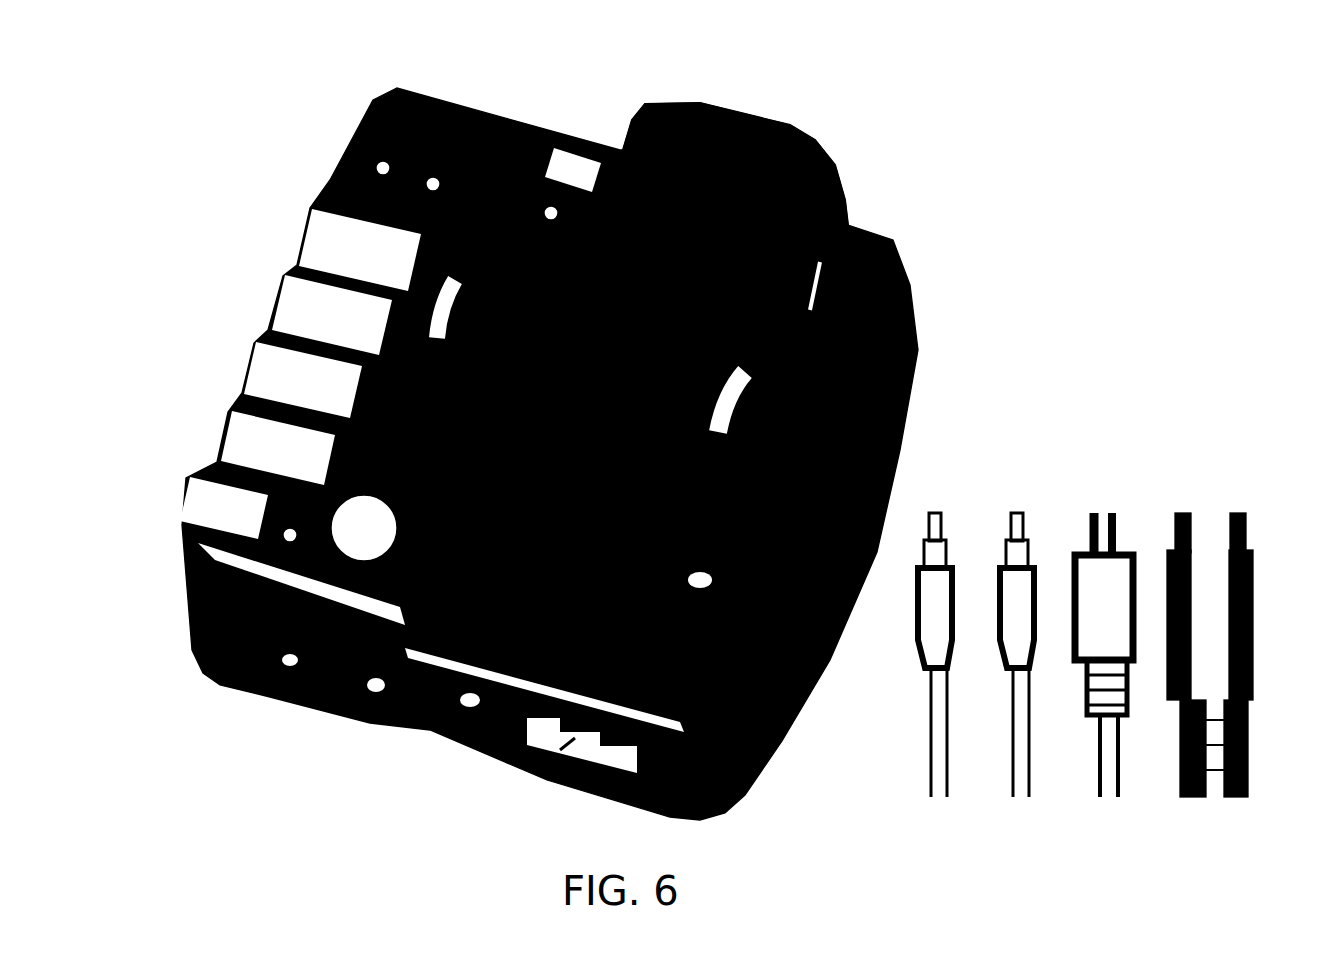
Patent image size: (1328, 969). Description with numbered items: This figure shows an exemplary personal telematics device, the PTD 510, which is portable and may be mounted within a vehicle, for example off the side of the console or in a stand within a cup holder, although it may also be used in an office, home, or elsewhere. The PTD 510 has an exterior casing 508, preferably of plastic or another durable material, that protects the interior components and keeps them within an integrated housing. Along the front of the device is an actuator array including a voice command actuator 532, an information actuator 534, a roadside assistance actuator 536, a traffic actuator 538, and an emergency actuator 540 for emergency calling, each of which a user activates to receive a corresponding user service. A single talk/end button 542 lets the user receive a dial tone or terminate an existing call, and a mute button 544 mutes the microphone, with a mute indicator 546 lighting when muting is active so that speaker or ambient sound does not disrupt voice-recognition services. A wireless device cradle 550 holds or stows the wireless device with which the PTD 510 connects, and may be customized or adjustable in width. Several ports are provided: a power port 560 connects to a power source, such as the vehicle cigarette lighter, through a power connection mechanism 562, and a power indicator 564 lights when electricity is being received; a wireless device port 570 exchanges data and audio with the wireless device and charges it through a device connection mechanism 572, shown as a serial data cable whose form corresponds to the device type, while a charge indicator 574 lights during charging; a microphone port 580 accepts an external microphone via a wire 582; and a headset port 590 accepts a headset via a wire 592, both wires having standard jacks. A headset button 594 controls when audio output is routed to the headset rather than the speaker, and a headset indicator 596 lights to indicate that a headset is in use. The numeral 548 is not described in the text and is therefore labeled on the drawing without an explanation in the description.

The PTD 510 is at (318, 170).
The exterior casing 508 is at (400, 110).
The charge indicator 574 is at (383, 168).
The power indicator 564 is at (433, 184).
The emergency (911) actuator 540 is at (498, 215).
The mute indicator 546 is at (551, 213).
The mute button 544 is at (592, 150).
The wireless device cradle 550 is at (798, 205).
The voice command actuator 532 is at (300, 238).
The information actuator 534 is at (275, 298).
The roadside assistance actuator 536 is at (245, 372).
The traffic actuator 538 is at (218, 433).
The headset button 594 is at (196, 502).
The headset indicator 596 is at (290, 537).
The talk/end button 548 is at (364, 528).
The talk/end button 542 is at (205, 675).
The headset port 590 is at (290, 668).
The microphone port 580 is at (376, 693).
The wireless device port 570 is at (470, 708).
The power port 560 is at (545, 770).
The wire 592 is at (926, 596).
The wire 582 is at (1008, 596).
The device connection mechanism 572 is at (1086, 596).
The power connection mechanism 562 is at (1250, 596).